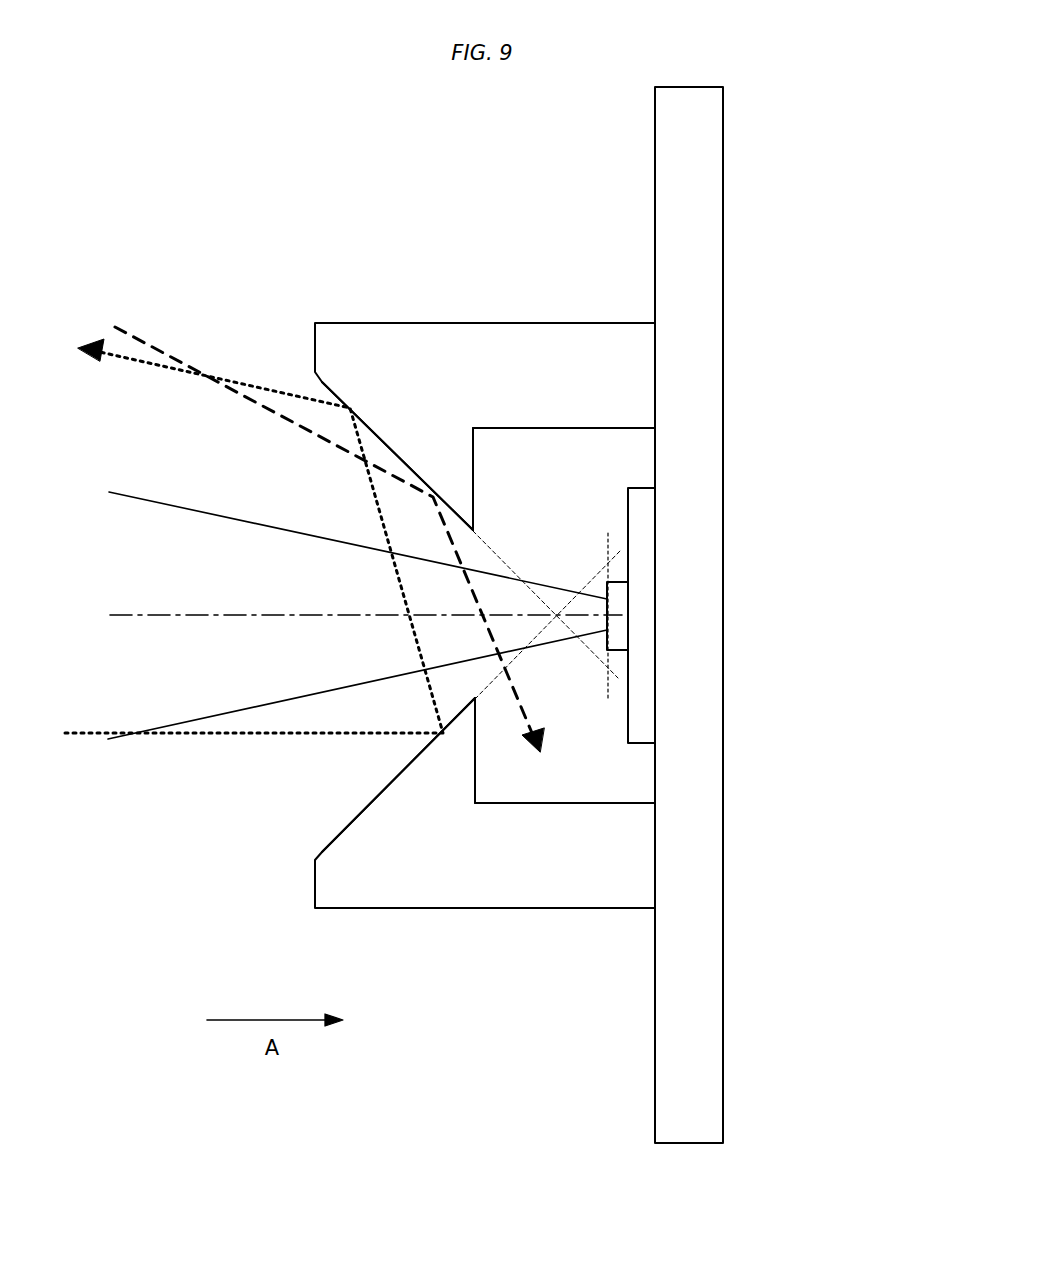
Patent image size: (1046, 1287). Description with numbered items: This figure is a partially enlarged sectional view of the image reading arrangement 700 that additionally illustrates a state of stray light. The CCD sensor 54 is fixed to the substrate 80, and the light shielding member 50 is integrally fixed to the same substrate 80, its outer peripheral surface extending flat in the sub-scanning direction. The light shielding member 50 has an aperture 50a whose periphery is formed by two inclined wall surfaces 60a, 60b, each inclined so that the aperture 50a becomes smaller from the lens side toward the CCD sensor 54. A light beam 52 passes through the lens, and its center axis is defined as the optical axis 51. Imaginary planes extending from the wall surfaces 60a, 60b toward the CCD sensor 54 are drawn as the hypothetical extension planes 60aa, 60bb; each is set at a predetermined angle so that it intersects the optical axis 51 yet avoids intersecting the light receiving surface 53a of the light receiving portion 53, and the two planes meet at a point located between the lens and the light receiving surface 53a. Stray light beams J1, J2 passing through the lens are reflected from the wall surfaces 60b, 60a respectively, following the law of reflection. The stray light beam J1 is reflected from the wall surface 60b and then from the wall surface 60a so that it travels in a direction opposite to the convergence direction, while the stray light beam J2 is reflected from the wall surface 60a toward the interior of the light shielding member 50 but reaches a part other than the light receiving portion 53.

The optical module 700 is at (303, 214).
The substrate 80 is at (712, 180).
The light shielding member 50 is at (418, 352).
The aperture 50a is at (476, 531).
The wall surface 60a is at (332, 390).
The wall surface 60b is at (368, 801).
The hypothetical extension plane 60aa is at (593, 653).
The hypothetical extension plane 60bb is at (589, 584).
The CCD sensor 54 is at (648, 557).
The light receiving portion 53 is at (623, 640).
The light receiving surface 53a is at (625, 615).
The light beam 52 is at (147, 500).
The optical axis 51 is at (215, 613).
The stray light beam J1 is at (205, 736).
The stray light beam J2 is at (150, 347).